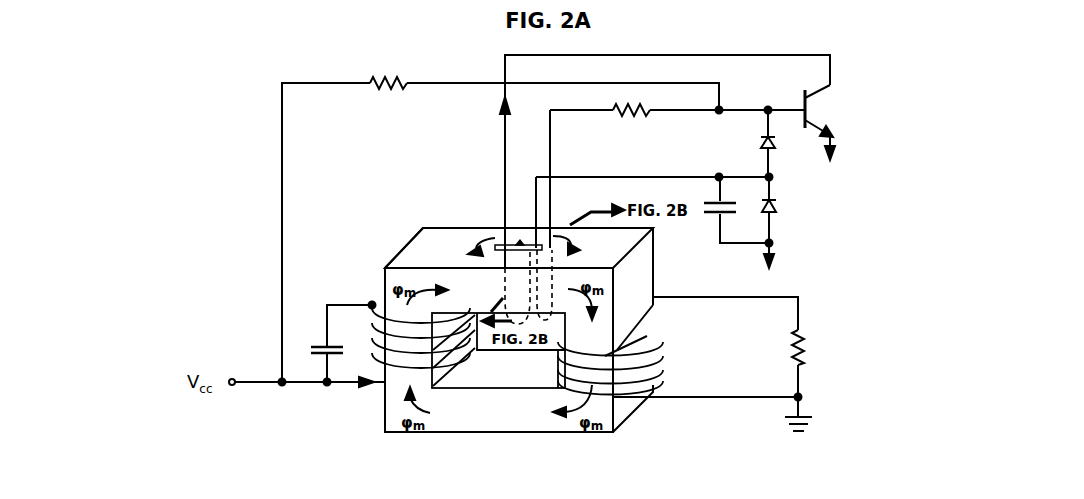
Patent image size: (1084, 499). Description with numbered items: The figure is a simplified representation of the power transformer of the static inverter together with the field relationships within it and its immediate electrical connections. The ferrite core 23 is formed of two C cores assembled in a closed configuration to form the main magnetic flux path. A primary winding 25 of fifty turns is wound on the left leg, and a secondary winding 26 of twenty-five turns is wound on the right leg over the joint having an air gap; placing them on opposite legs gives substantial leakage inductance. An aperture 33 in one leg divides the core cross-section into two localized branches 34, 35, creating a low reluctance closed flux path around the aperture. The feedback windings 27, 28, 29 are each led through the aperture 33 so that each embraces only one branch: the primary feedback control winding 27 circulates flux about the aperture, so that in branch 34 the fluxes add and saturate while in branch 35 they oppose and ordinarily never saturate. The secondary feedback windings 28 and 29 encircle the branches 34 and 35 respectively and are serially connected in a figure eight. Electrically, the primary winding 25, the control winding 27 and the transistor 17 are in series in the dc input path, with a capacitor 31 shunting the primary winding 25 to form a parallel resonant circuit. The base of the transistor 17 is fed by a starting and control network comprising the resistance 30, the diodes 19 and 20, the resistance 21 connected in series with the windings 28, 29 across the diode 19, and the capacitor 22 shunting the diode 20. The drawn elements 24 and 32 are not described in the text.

The transistor 17 is at (820, 95).
The diode 19 is at (760, 140).
The diode 20 is at (779, 205).
The resistance 21 is at (617, 113).
The capacitor 22 is at (715, 212).
The ferrite core 23 is at (500, 413).
The coil lead 24 is at (647, 338).
The primary winding 25 is at (372, 385).
The secondary winding 26 is at (630, 398).
The primary feedback control winding 27 is at (503, 226).
The secondary feedback winding 28 is at (657, 312).
The secondary feedback winding 29 is at (567, 287).
The resistance 30 is at (383, 81).
The capacitor 31 is at (318, 342).
The resistor 32 is at (808, 344).
The aperture 33 is at (497, 246).
The core branch 34 is at (473, 287).
The core branch 35 is at (521, 235).